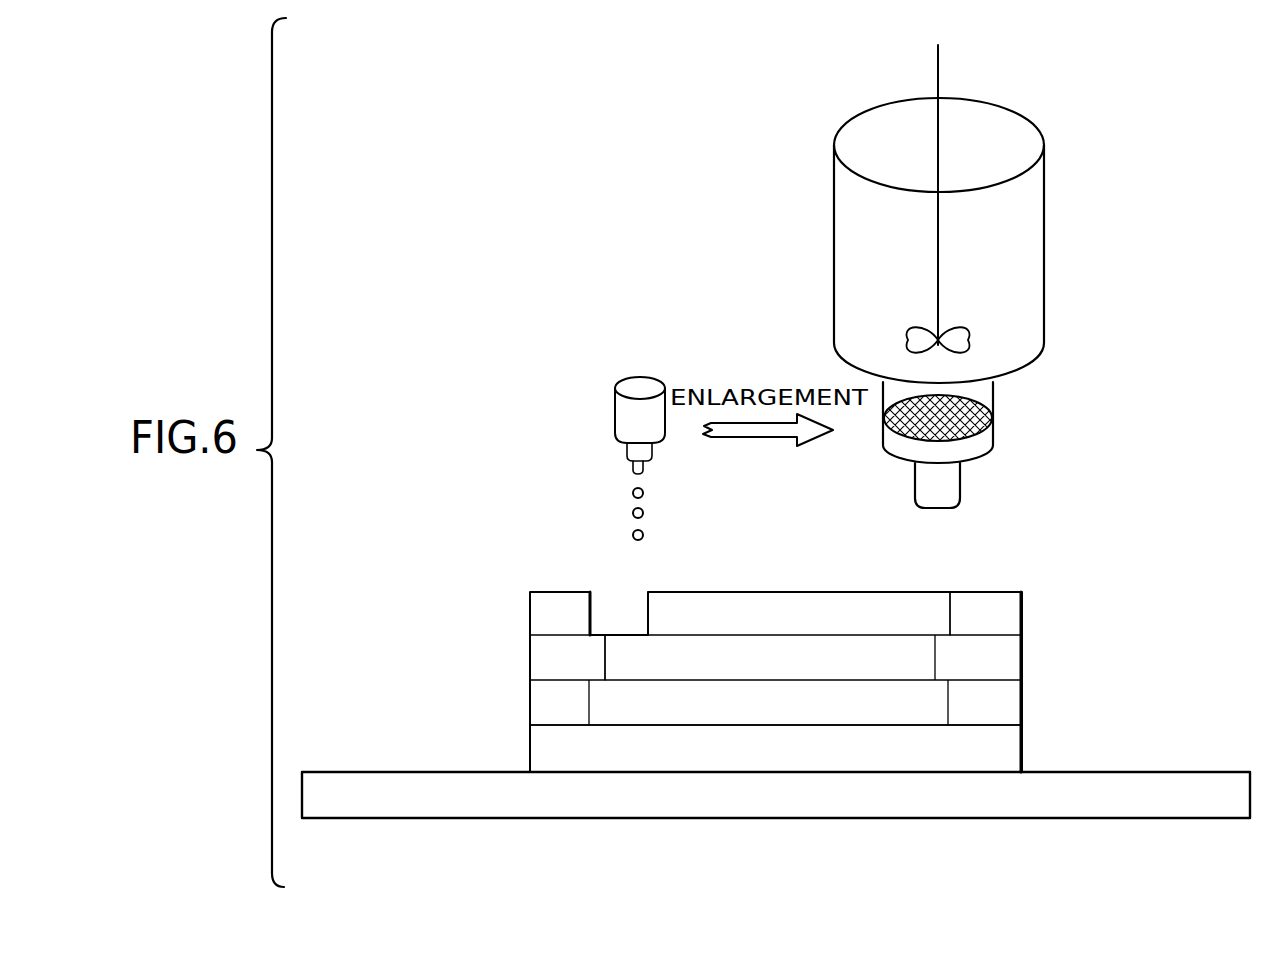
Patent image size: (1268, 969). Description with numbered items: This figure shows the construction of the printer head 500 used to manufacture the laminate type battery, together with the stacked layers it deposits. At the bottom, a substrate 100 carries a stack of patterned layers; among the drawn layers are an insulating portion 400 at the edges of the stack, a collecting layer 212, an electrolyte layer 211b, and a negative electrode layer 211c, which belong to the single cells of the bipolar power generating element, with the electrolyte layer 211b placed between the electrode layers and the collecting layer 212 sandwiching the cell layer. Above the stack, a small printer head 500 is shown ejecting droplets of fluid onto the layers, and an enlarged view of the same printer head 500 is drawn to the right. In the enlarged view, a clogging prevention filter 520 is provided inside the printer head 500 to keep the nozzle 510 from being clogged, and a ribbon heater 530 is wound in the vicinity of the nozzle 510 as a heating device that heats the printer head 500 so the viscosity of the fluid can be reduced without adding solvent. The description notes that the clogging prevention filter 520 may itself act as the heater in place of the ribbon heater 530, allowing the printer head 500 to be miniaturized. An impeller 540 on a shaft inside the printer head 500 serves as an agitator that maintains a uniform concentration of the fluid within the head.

The substrate 100 is at (668, 806).
The collecting layer 212 is at (883, 710).
The electrolyte layer 211b is at (723, 598).
The negative electrode layer 211c is at (628, 655).
The insulating portion 400 is at (534, 612).
The printer head 500 is at (641, 360).
The nozzle 510 is at (961, 490).
The clogging prevention filter 520 is at (985, 410).
The ribbon heater 530 is at (990, 458).
The impeller 540 is at (939, 75).